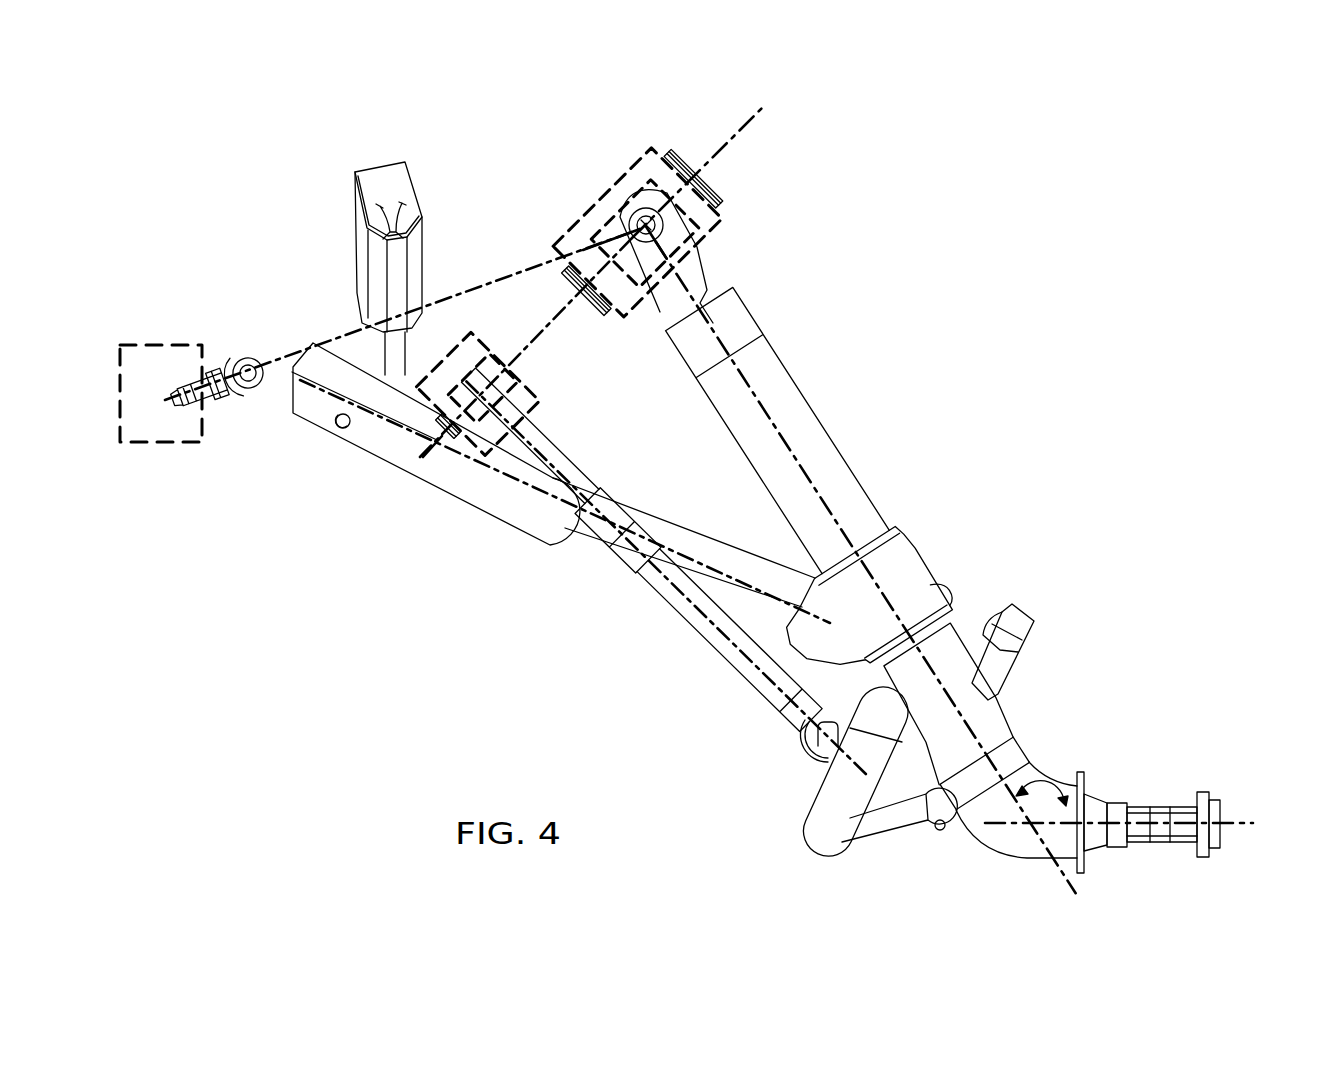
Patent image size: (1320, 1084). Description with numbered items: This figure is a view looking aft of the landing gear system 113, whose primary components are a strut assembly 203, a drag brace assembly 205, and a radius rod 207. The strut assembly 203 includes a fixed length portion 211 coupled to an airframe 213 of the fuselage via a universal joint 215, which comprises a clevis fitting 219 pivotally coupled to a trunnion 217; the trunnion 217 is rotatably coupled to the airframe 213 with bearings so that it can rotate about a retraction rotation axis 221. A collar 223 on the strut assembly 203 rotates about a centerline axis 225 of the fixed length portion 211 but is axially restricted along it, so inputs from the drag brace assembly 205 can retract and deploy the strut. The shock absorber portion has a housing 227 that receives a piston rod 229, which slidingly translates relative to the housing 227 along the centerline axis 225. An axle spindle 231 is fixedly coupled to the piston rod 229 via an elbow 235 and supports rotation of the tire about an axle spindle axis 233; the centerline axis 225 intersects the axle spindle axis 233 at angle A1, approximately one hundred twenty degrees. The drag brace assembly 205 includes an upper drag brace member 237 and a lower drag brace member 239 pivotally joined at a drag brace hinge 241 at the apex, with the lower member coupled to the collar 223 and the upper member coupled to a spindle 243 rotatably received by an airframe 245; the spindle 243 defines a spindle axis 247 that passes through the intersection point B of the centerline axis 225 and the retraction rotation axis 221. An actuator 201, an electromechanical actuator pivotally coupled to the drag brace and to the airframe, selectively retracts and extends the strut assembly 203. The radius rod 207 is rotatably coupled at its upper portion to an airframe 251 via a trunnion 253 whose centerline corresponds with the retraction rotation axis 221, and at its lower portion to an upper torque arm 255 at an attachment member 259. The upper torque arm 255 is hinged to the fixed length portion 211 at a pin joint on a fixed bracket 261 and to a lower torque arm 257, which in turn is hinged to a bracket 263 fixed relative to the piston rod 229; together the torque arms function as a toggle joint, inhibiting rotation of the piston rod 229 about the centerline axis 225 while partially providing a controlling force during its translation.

The landing gear system 113 is at (930, 250).
The actuator 201 is at (395, 163).
The strut assembly 203 is at (852, 452).
The drag brace assembly 205 is at (386, 500).
The radius rod 207 is at (682, 627).
The fixed length portion 211 is at (778, 366).
The airframe 213 is at (627, 162).
The universal joint 215 is at (728, 180).
The trunnion 217 is at (600, 237).
The clevis fitting 219 is at (716, 263).
The retraction rotation axis 221 is at (546, 332).
The collar 223 is at (938, 553).
The centerline axis 225 is at (770, 408).
The housing 227 is at (962, 620).
The piston rod 229 is at (1000, 721).
The axle spindle 231 is at (1157, 847).
The axle spindle axis 233 is at (1243, 827).
The elbow 235 is at (1037, 861).
The upper drag brace member 237 is at (343, 452).
The lower drag brace member 239 is at (620, 565).
The drag brace hinge 241 is at (537, 529).
The spindle 243 is at (230, 397).
The airframe 245 is at (150, 344).
The spindle axis 247 is at (508, 274).
The airframe 251 is at (548, 381).
The trunnion 253 is at (460, 453).
The upper torque arm 255 is at (816, 796).
The lower torque arm 257 is at (880, 829).
The attachment member 259 is at (806, 736).
The fixed bracket 261 is at (975, 684).
The bracket 263 is at (1035, 748).
The intersection point B is at (641, 222).
The angle A1 is at (1042, 803).